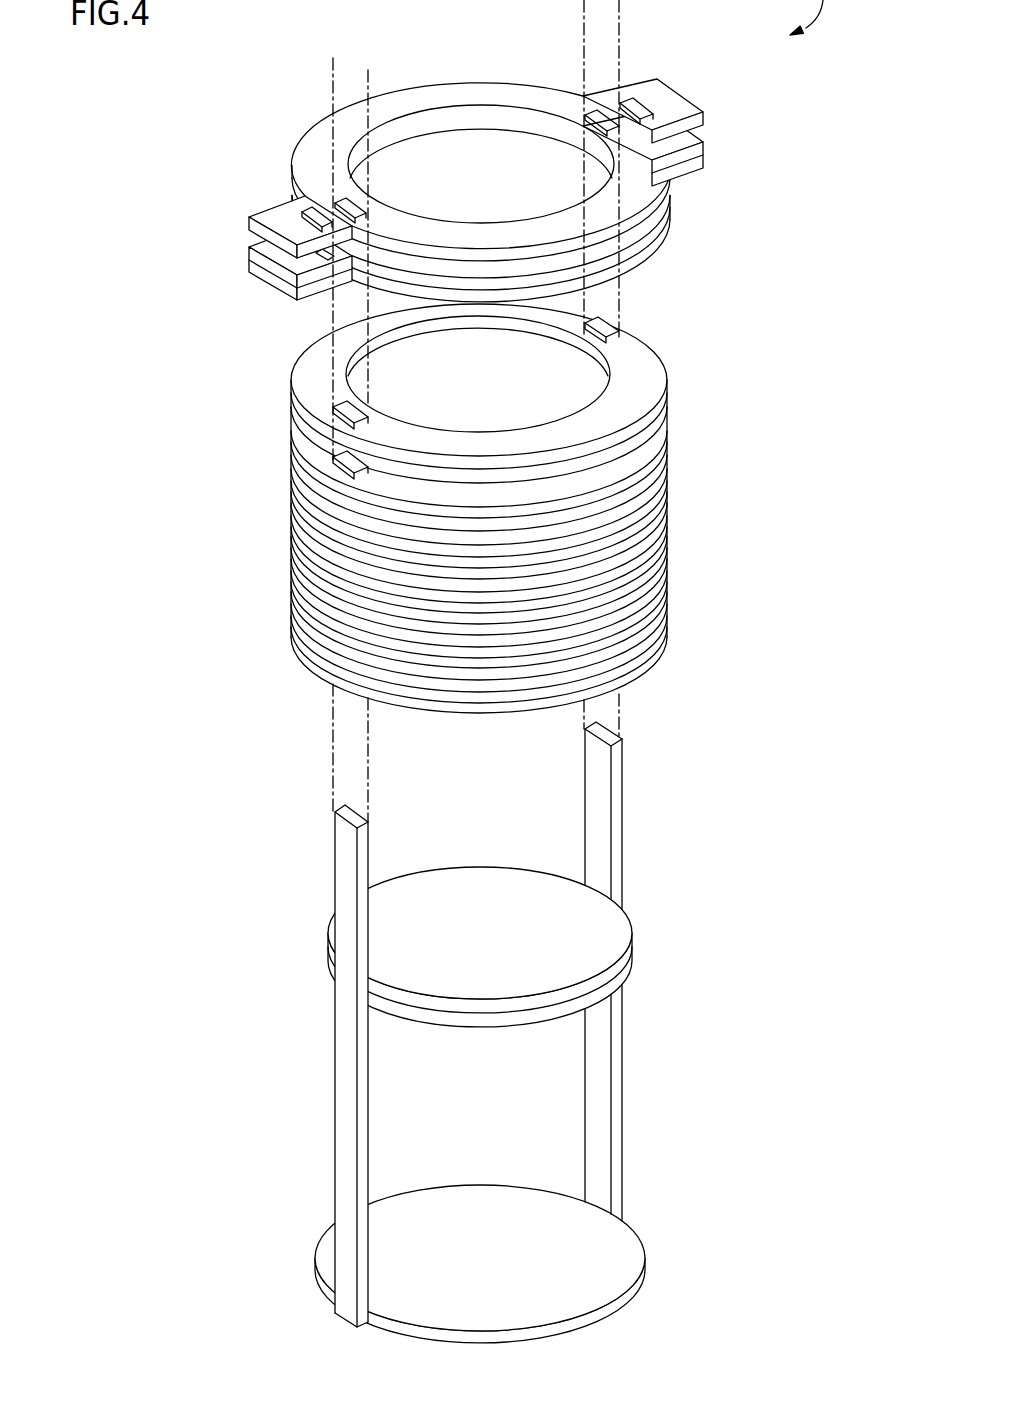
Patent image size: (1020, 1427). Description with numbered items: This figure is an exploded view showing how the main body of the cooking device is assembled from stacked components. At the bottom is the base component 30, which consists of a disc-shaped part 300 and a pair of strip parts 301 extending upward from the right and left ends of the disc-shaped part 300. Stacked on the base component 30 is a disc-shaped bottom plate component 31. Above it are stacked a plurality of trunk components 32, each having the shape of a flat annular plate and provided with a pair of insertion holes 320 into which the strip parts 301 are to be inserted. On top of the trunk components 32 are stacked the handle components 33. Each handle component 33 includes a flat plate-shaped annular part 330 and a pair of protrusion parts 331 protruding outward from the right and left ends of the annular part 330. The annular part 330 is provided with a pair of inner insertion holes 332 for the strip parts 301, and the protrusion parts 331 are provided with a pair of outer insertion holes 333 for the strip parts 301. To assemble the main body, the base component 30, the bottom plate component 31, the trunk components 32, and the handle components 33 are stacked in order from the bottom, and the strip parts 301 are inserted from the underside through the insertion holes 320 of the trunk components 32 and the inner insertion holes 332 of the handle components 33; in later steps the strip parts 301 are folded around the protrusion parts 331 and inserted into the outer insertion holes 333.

The base component 30 is at (517, 1237).
The disc-shaped part 300 is at (472, 1192).
The strip parts 301 is at (333, 1110).
The bottom plate component 31 is at (647, 920).
The trunk components 32 is at (458, 508).
The insertion holes 320 is at (352, 412).
The handle components 33 is at (452, 163).
The annular part 330 is at (471, 86).
The protrusion parts 331 is at (250, 229).
The inner insertion holes 332 is at (352, 204).
The outer insertion holes 333 is at (320, 210).